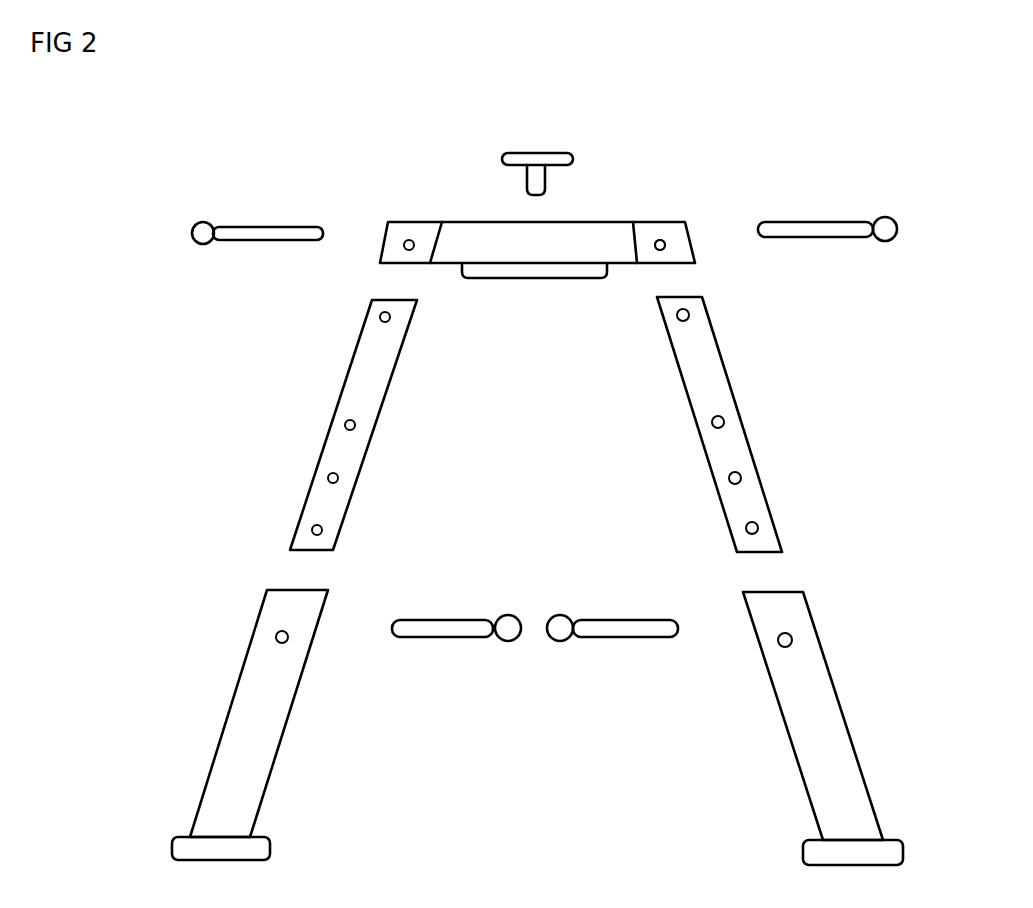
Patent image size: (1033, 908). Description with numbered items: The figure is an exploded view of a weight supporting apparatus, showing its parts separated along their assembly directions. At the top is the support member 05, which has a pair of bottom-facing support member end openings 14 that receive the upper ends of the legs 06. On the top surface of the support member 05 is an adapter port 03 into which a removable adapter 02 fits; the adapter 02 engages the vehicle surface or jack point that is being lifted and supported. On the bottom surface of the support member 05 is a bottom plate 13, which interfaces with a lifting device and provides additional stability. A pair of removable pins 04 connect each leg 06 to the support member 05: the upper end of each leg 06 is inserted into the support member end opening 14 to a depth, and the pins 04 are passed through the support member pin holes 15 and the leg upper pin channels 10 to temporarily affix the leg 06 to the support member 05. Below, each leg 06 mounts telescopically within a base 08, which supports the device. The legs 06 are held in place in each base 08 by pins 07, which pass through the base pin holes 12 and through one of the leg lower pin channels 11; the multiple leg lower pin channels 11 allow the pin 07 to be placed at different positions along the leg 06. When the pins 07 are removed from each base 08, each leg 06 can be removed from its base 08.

The adapter 02 is at (537, 153).
The adapter port 03 is at (550, 222).
The removable pins 04 is at (272, 227).
The support member 05 is at (472, 222).
The leg 06 is at (682, 385).
The pins 07 is at (612, 637).
The base 08 is at (268, 787).
The leg upper pin channels 10 is at (385, 317).
The leg lower pin channels 11 is at (350, 425).
The base pin holes 12 is at (282, 637).
The bottom plate 13 is at (570, 283).
The support member end opening 14 is at (393, 267).
The support member pin holes 15 is at (662, 245).